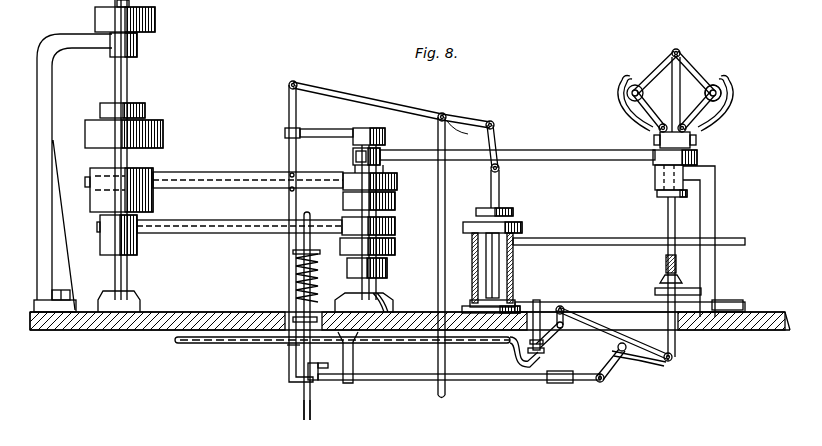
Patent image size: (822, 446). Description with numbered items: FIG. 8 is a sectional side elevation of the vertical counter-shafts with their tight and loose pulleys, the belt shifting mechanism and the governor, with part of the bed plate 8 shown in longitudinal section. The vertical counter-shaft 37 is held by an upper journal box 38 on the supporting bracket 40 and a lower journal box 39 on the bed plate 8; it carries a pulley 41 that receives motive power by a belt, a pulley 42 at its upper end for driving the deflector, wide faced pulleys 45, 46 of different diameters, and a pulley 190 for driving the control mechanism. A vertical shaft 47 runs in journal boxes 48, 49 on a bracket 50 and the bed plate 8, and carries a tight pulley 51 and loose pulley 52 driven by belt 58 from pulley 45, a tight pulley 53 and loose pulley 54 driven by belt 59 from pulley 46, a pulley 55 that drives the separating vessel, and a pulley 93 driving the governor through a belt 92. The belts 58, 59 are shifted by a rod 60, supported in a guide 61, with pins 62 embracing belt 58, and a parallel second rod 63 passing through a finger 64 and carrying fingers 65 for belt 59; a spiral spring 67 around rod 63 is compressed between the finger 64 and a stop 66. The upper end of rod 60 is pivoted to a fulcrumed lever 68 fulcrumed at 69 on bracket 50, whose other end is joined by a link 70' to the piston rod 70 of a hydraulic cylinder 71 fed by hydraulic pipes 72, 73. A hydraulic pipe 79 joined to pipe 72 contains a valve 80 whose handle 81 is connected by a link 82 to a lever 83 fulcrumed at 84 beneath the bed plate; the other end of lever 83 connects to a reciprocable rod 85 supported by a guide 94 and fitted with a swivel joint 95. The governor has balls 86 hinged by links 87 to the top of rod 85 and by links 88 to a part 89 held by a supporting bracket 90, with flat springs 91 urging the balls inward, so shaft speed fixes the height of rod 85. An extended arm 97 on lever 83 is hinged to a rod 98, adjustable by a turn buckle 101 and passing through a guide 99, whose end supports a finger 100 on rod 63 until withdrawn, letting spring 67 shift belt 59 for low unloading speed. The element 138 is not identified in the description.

The bed plate 8 is at (118, 325).
The vertical counter-shaft 37 is at (115, 86).
The journal box 38 is at (138, 52).
The journal box 39 is at (140, 297).
The supporting bracket 40 is at (48, 44).
The pulley 41 is at (96, 124).
The pulley 42 is at (155, 20).
The wide faced pulley 45 is at (100, 168).
The wide faced pulley 46 is at (137, 248).
The vertical shaft 47 is at (378, 128).
The journal box 48 is at (366, 128).
The journal box 49 is at (365, 302).
The bracket 50 is at (353, 156).
The tight pulley 51 is at (397, 183).
The loose pulley 52 is at (395, 202).
The tight pulley 53 is at (395, 246).
The loose pulley 54 is at (395, 225).
The pulley 55 is at (388, 268).
The belt 58 is at (186, 168).
The belt 59 is at (206, 220).
The rod 60 is at (289, 105).
The guide 61 is at (285, 133).
The fingers or pins 62 is at (290, 189).
The second rod 63 is at (304, 412).
The finger 64 is at (293, 253).
The fingers 65 is at (303, 218).
The stop 66 is at (287, 345).
The spiral spring 67 is at (296, 290).
The fulcrumed lever 68 is at (325, 82).
The fulcrum 69 is at (441, 113).
The piston rod 70 is at (505, 189).
The link 70' is at (508, 143).
The hydraulic cylinder 71 is at (513, 270).
The hydraulic pipe 72 is at (630, 302).
The hydraulic pipe 73 is at (563, 238).
The hydraulic pipe 79 is at (222, 348).
The valve 80 is at (515, 358).
The handle 81 is at (546, 338).
The link 82 is at (560, 306).
The lever 83 is at (584, 318).
The fulcrum 84 is at (636, 356).
The reciprocable rod 85 is at (665, 75).
The governor balls 86 is at (626, 96).
The links 87 is at (698, 68).
The links 88 is at (648, 120).
The part 89 is at (692, 141).
The supporting bracket 90 is at (716, 178).
The flat springs 91 is at (722, 98).
The belt 92 is at (572, 156).
The pulley 93 is at (353, 160).
The guide 94 is at (702, 291).
The swivel joint 95 is at (677, 270).
The extended arm 97 is at (612, 366).
The rod 98 is at (330, 382).
The guide 99 is at (354, 382).
The finger 100 is at (314, 382).
The turn buckle 101 is at (560, 384).
The link 138 is at (458, 118).
The pulley 190 is at (146, 110).